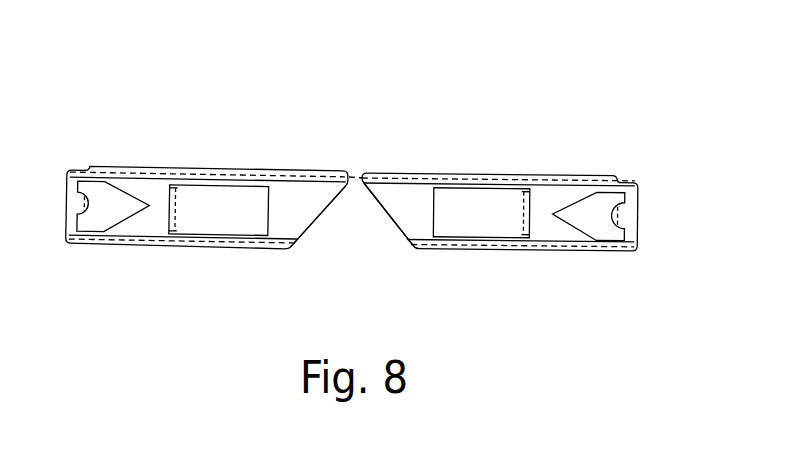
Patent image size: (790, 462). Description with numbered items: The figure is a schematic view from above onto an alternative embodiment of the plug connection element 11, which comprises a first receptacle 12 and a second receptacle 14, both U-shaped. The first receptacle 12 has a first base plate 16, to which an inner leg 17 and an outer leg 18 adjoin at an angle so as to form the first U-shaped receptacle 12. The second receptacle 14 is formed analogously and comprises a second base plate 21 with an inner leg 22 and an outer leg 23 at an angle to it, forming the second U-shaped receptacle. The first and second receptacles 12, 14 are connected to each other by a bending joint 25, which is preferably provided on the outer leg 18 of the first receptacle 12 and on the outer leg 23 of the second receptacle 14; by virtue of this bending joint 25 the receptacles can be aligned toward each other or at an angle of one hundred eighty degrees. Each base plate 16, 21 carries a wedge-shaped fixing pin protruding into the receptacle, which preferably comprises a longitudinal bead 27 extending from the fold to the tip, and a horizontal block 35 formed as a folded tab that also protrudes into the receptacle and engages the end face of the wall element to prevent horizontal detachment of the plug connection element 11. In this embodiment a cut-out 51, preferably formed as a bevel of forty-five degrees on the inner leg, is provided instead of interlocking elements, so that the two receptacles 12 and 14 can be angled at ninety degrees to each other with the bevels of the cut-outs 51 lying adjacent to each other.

The plug connection element 11 is at (362, 100).
The first receptacle 12 is at (100, 135).
The second receptacle 14 is at (607, 142).
The first base plate 16 is at (152, 225).
The inner leg 17 is at (262, 168).
The outer leg 18 is at (243, 247).
The second base plate 21 is at (417, 213).
The inner leg 22 is at (558, 175).
The outer leg 23 is at (552, 252).
The bending joint 25 is at (357, 167).
The longitudinal bead 27 is at (93, 200).
The horizontal block 35 is at (177, 206).
The cut-out 51 is at (320, 248).